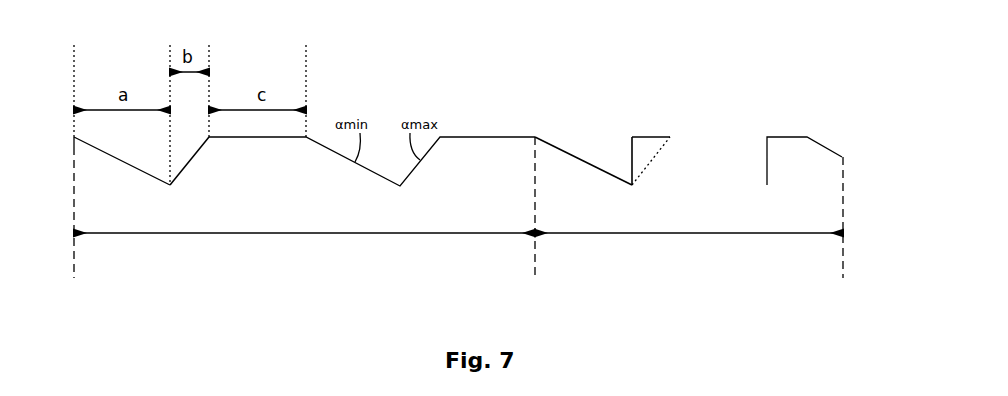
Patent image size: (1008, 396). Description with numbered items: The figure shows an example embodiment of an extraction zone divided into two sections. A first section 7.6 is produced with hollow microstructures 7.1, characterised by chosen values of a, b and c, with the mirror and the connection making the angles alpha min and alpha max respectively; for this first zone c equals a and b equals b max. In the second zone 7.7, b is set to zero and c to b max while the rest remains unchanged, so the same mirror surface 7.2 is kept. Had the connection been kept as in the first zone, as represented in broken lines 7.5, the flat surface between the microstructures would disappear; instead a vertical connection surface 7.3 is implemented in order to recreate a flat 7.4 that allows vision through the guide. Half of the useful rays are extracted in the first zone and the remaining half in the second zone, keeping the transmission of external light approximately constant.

The hollow microstructures 7.1 is at (184, 164).
The mirror surface 7.2 is at (593, 167).
The vertical connection surface 7.3 is at (630, 158).
The flat 7.4 is at (643, 137).
The connection kept as in the first zone 7.5 is at (655, 157).
The first section 7.6 is at (297, 233).
The second zone 7.7 is at (667, 238).